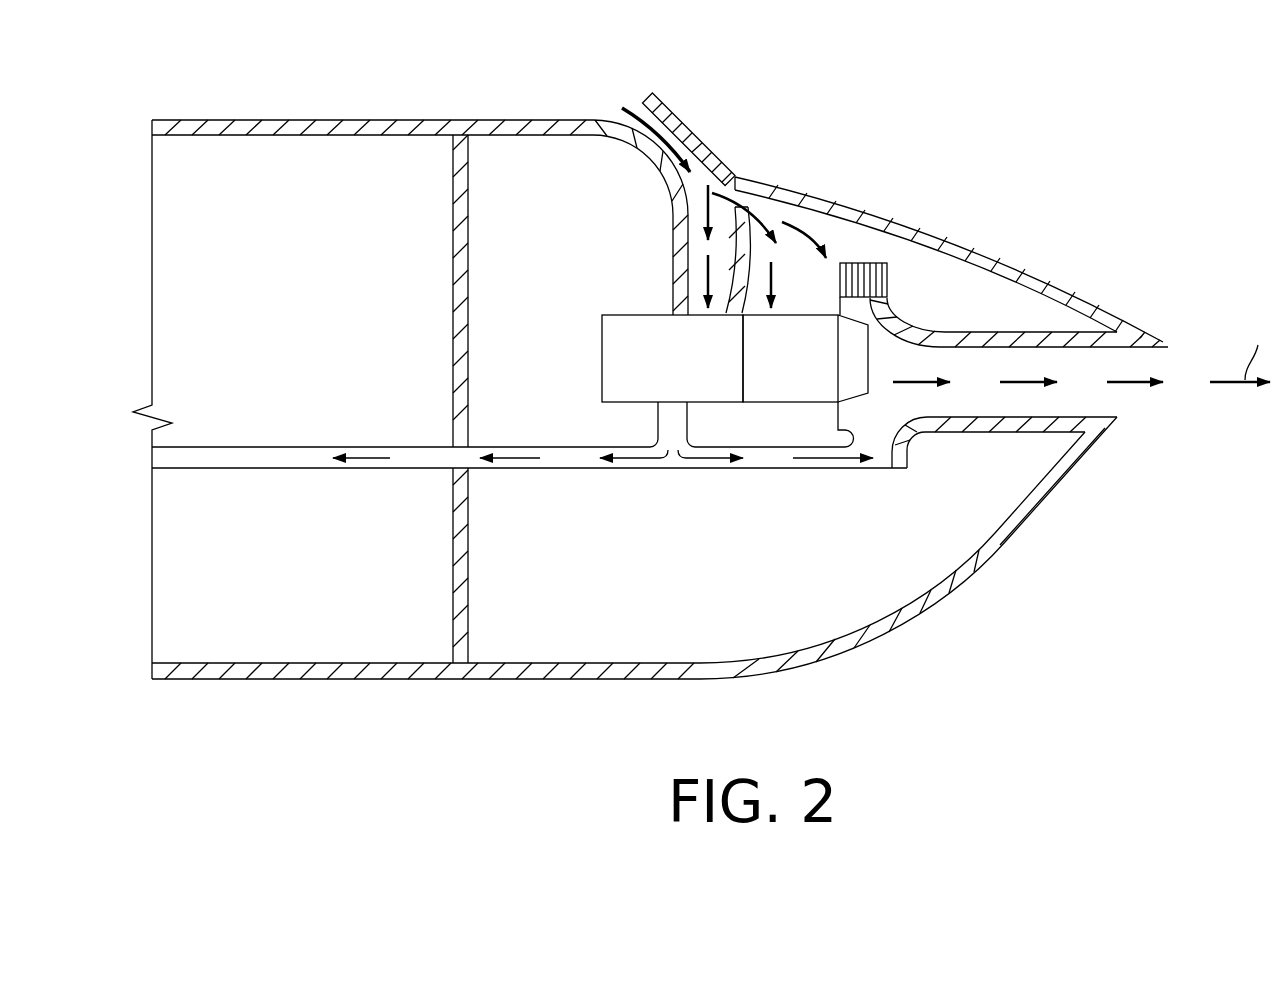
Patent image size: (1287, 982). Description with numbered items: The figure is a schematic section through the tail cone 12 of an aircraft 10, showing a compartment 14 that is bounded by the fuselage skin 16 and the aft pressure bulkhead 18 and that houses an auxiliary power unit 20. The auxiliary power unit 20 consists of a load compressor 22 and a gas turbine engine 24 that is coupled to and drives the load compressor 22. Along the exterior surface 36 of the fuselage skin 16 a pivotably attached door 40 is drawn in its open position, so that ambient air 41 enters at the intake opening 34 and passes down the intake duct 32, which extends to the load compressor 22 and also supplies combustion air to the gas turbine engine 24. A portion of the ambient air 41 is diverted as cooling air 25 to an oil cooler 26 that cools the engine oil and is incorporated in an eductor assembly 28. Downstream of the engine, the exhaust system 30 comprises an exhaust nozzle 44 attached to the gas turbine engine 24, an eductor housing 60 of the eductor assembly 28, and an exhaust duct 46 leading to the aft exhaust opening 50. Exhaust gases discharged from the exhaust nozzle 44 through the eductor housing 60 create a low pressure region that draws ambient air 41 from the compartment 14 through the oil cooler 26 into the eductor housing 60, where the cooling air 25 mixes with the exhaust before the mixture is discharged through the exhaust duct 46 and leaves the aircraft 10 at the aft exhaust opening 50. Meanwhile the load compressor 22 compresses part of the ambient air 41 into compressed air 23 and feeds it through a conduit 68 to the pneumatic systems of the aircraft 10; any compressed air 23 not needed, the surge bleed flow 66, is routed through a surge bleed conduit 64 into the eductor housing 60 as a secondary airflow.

The aircraft 10 is at (1120, 178).
The tail cone 12 is at (570, 682).
The compartment 14 is at (530, 224).
The fuselage skin 16 is at (955, 589).
The aft pressure bulkhead 18 is at (468, 558).
The auxiliary power unit 20 is at (694, 358).
The load compressor 22 is at (658, 394).
The compressed air 23 is at (368, 462).
The gas turbine engine 24 is at (776, 394).
The cooling air 25 is at (949, 232).
The oil cooler 26 is at (855, 262).
The eductor assembly 28 is at (888, 283).
The exhaust system 30 is at (985, 316).
The intake duct 32 is at (672, 237).
The intake opening 34 is at (622, 110).
The exterior surface 36 is at (300, 120).
The door 40 is at (665, 107).
The ambient air 41 is at (634, 112).
The exhaust nozzle 44 is at (908, 311).
The exhaust duct 46 is at (1090, 328).
The aft exhaust opening 50 is at (1160, 350).
The eductor housing 60 is at (920, 438).
The surge bleed conduit 64 is at (668, 470).
The surge bleed flow 66 is at (833, 469).
The conduit 68 is at (500, 446).